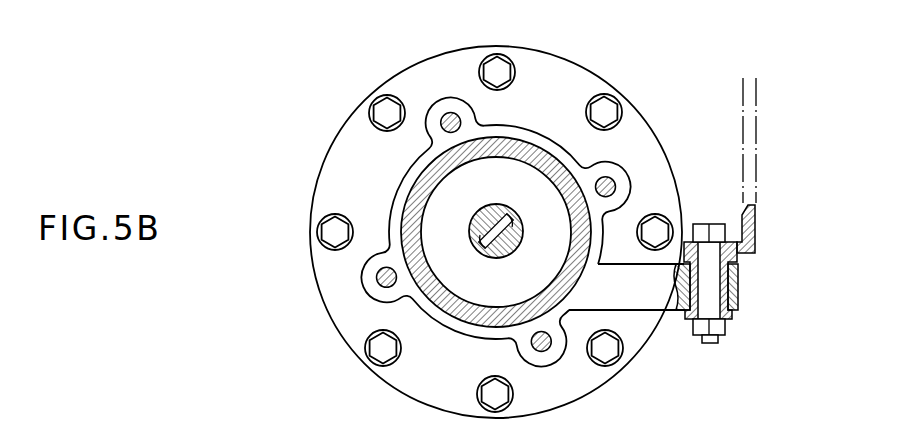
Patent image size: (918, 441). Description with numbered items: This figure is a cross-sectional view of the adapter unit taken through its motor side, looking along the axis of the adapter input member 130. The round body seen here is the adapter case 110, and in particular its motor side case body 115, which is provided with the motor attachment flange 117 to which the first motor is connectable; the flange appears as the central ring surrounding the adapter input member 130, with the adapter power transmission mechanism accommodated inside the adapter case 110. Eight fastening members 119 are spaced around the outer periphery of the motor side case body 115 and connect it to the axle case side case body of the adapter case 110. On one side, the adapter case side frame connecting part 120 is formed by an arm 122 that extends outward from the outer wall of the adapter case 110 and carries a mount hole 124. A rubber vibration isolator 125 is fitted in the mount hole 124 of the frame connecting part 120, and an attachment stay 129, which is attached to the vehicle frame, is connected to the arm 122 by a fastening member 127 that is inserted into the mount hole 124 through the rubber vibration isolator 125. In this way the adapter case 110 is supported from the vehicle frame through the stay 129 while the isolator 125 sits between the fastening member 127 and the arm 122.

The adapter case 110 is at (338, 165).
The motor side case body 115 is at (325, 205).
The motor attachment flange 117 is at (470, 144).
The fastening members 119 is at (498, 70).
The adapter case side frame connecting part 120 is at (768, 318).
The arm 122 is at (663, 297).
The mount hole 124 is at (715, 287).
The rubber vibration isolator 125 is at (738, 258).
The fastening member 127 is at (705, 257).
The attachment stay 129 is at (748, 228).
The adapter input member 130 is at (492, 258).